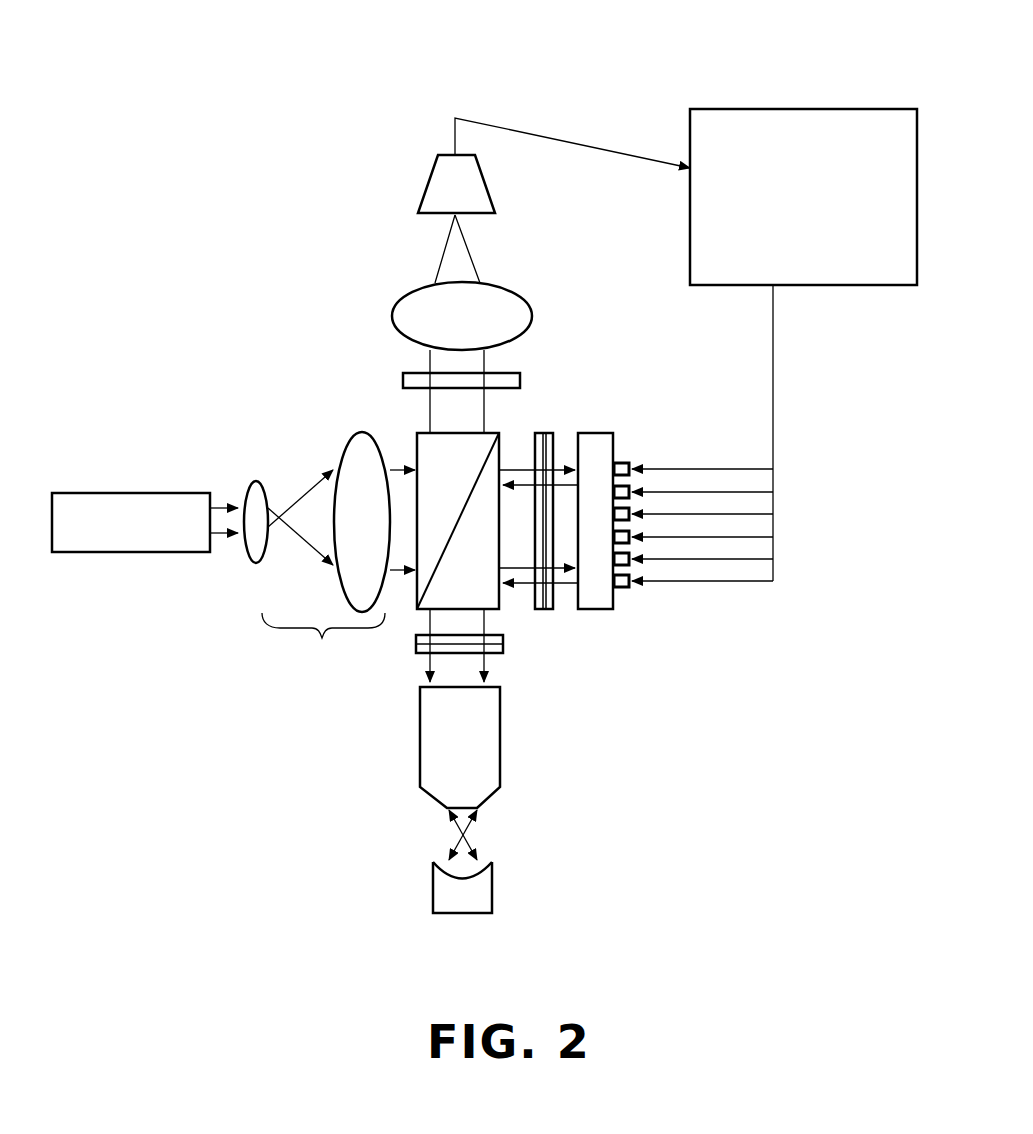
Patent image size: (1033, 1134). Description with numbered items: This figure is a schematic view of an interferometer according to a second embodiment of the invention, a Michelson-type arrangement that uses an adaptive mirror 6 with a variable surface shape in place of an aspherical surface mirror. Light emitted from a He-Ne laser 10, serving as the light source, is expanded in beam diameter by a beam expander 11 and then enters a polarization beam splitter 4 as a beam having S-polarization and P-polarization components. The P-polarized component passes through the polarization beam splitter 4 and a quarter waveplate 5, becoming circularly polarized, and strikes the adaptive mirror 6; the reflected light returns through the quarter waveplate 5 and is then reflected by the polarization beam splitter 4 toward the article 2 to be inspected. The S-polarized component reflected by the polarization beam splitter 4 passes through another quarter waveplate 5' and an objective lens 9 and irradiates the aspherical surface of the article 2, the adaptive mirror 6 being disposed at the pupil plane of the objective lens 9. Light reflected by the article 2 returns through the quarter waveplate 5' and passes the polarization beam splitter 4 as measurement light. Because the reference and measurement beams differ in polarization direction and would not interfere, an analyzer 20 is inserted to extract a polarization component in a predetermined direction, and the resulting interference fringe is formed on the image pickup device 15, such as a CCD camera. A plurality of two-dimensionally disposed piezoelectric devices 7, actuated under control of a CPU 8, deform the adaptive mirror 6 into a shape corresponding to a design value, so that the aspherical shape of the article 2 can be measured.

The article to be inspected 2 is at (443, 900).
The polarization beam splitter 4 is at (427, 450).
The quarter waveplate 5 is at (604, 580).
The quarter waveplate 5' is at (516, 710).
The adaptive mirror 6 is at (615, 610).
The piezoelectric devices 7 is at (622, 462).
The CPU 8 is at (880, 136).
The objective lens 9 is at (434, 738).
The He-Ne laser 10 is at (172, 534).
The beam expander 11 is at (317, 553).
The image pickup device 15 is at (440, 187).
The plate 20 is at (408, 380).